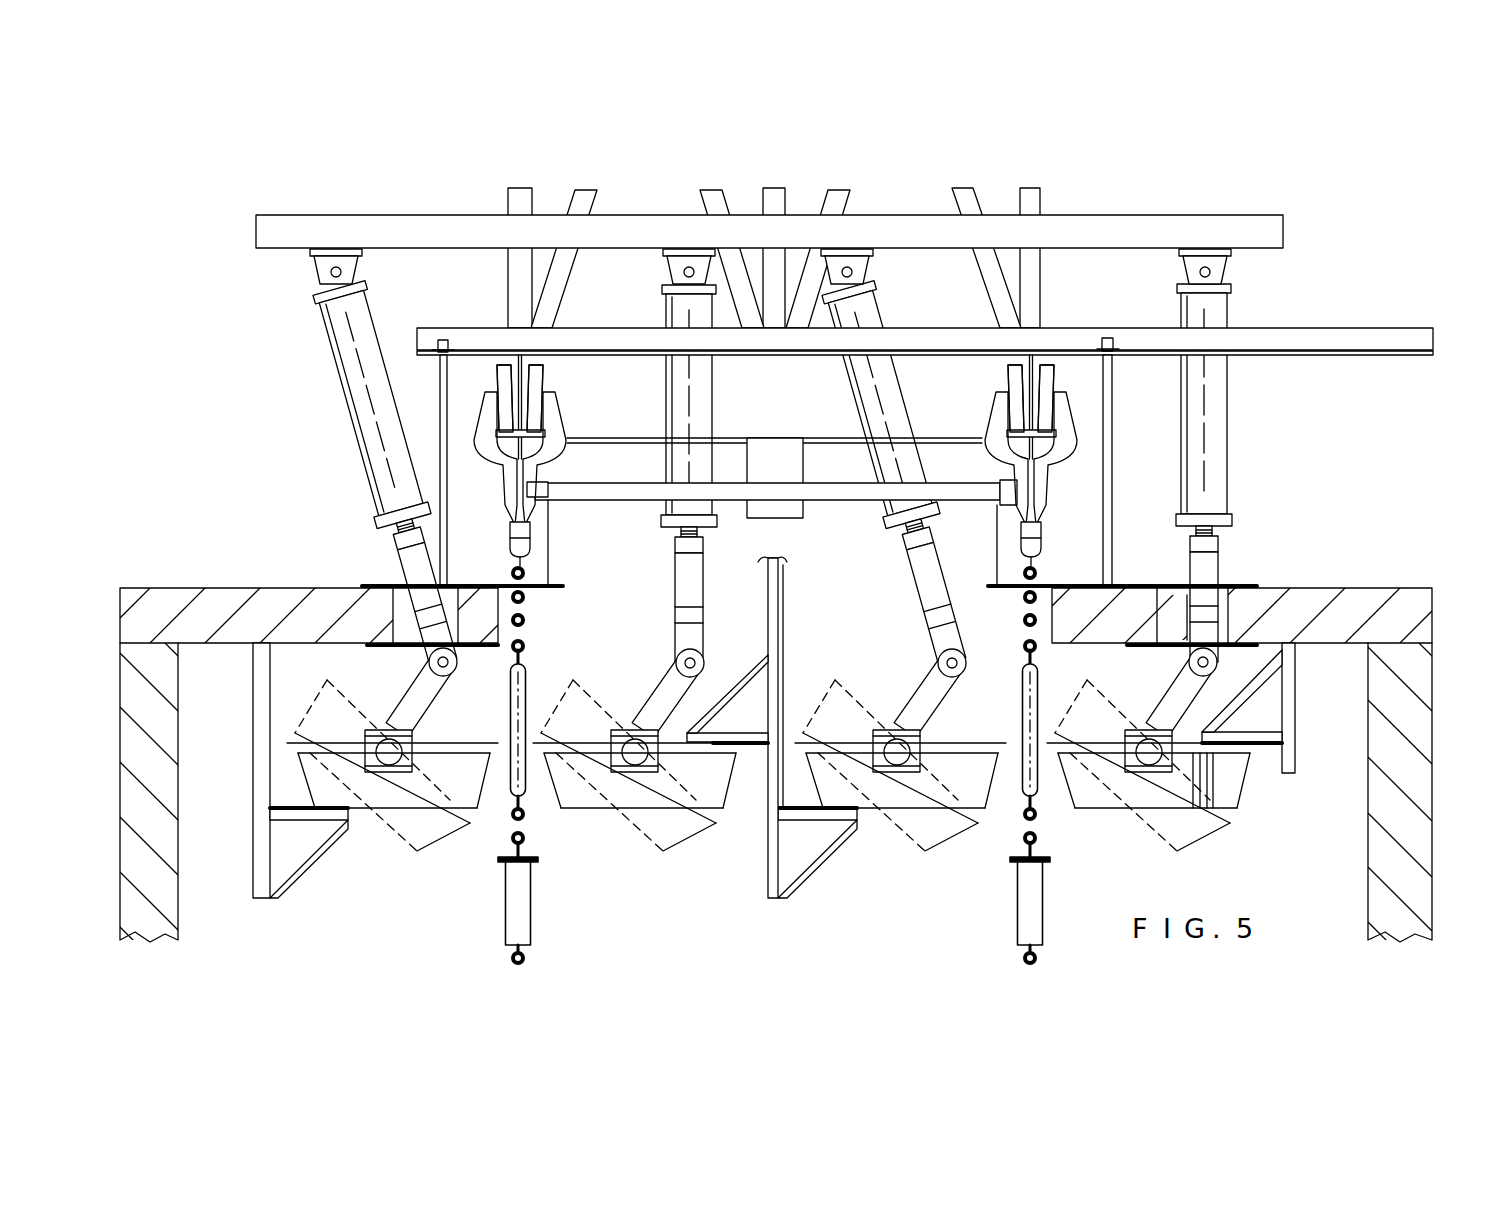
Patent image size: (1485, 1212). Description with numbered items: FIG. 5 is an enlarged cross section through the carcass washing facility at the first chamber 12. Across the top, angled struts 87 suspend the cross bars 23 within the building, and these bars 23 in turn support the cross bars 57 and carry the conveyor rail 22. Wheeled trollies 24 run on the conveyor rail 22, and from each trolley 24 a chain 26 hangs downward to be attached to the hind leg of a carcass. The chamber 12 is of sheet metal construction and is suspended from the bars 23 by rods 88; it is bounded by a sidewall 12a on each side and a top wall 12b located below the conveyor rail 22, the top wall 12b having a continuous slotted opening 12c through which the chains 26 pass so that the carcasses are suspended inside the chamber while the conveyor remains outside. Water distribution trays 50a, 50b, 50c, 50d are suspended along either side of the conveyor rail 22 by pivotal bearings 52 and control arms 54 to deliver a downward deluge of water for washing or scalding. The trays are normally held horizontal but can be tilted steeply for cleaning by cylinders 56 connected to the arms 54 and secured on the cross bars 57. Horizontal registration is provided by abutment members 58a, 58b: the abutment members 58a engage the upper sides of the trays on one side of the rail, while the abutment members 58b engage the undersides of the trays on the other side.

The first chamber 12 is at (775, 720).
The sidewall 12a is at (165, 787).
The top wall 12b is at (315, 610).
The slotted opening 12c is at (403, 622).
The conveyor rail 22 is at (505, 390).
The cross bar 23 is at (1345, 337).
The trolley 24 is at (553, 417).
The chain 26 is at (543, 618).
The water distribution tray 50a is at (425, 808).
The water distribution tray 50b is at (678, 810).
The water distribution tray 50c is at (953, 810).
The water distribution tray 50d is at (1197, 808).
The pivotal bearing 52 is at (327, 703).
The control arm 54 is at (407, 703).
The cylinder 56 is at (358, 402).
The cross bar 57 is at (383, 237).
The abutment member 58a is at (753, 755).
The abutment member 58b is at (303, 817).
The angled strut 87 is at (703, 200).
The rod 88 is at (440, 465).